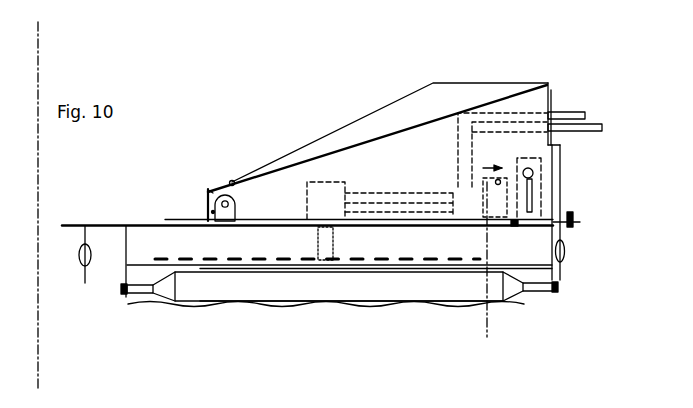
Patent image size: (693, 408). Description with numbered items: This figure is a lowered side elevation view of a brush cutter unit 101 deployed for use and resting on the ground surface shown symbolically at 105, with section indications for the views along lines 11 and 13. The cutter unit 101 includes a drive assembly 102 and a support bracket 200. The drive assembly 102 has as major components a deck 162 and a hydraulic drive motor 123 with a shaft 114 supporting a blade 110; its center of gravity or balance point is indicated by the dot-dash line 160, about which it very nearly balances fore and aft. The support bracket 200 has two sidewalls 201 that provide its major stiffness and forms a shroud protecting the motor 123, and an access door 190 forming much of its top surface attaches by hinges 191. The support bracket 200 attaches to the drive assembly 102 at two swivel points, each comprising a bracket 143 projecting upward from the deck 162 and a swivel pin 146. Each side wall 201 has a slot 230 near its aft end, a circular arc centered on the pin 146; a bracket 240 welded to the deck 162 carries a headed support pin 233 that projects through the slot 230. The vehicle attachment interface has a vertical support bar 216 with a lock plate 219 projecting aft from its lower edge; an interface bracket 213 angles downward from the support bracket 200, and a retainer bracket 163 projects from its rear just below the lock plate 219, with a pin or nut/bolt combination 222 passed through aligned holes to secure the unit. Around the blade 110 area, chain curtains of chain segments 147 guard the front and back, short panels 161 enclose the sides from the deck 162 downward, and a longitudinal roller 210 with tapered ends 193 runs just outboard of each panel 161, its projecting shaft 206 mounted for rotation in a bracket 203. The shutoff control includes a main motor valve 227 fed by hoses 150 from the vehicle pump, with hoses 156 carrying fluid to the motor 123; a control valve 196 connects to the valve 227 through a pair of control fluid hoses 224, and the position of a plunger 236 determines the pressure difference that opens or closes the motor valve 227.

The section line 11- 11 is at (28, 37).
The section line 13- 13 is at (473, 325).
The cutter unit 101 is at (146, 72).
The drive assembly 102 is at (410, 321).
The ground surface 105 is at (464, 305).
The blade 110 is at (216, 255).
The shaft 114 is at (325, 252).
The drive motor 123 is at (314, 180).
The bracket 143 is at (207, 205).
The swivel pin 146 is at (207, 193).
The chain segments 147 is at (85, 284).
The hoses 150 is at (596, 124).
The hoses 156 is at (413, 200).
The dot-dash line 160 is at (378, 304).
The panels 161 is at (137, 243).
The deck 162 is at (150, 224).
The retainer bracket 163 is at (574, 225).
The access door 190 is at (357, 122).
The hinges 191 is at (230, 180).
The tapered ends 193 is at (173, 305).
The control valve 196 is at (543, 284).
The support bracket 200 is at (406, 103).
The sidewalls 201 is at (549, 145).
The bracket 203 is at (125, 294).
The projecting shaft 206 is at (138, 291).
The roller 210 is at (318, 294).
The interface bracket 213 is at (553, 146).
The vertical support bar 216 is at (562, 182).
The lock plate 219 is at (574, 217).
The pin or nut/bolt combination 222 is at (566, 246).
The control fluid hoses 224 is at (517, 228).
The main motor valve 227 is at (453, 188).
The slot 230 is at (527, 168).
The support pin 233 is at (529, 160).
The plunger 236 is at (497, 166).
The bracket 240 is at (573, 112).